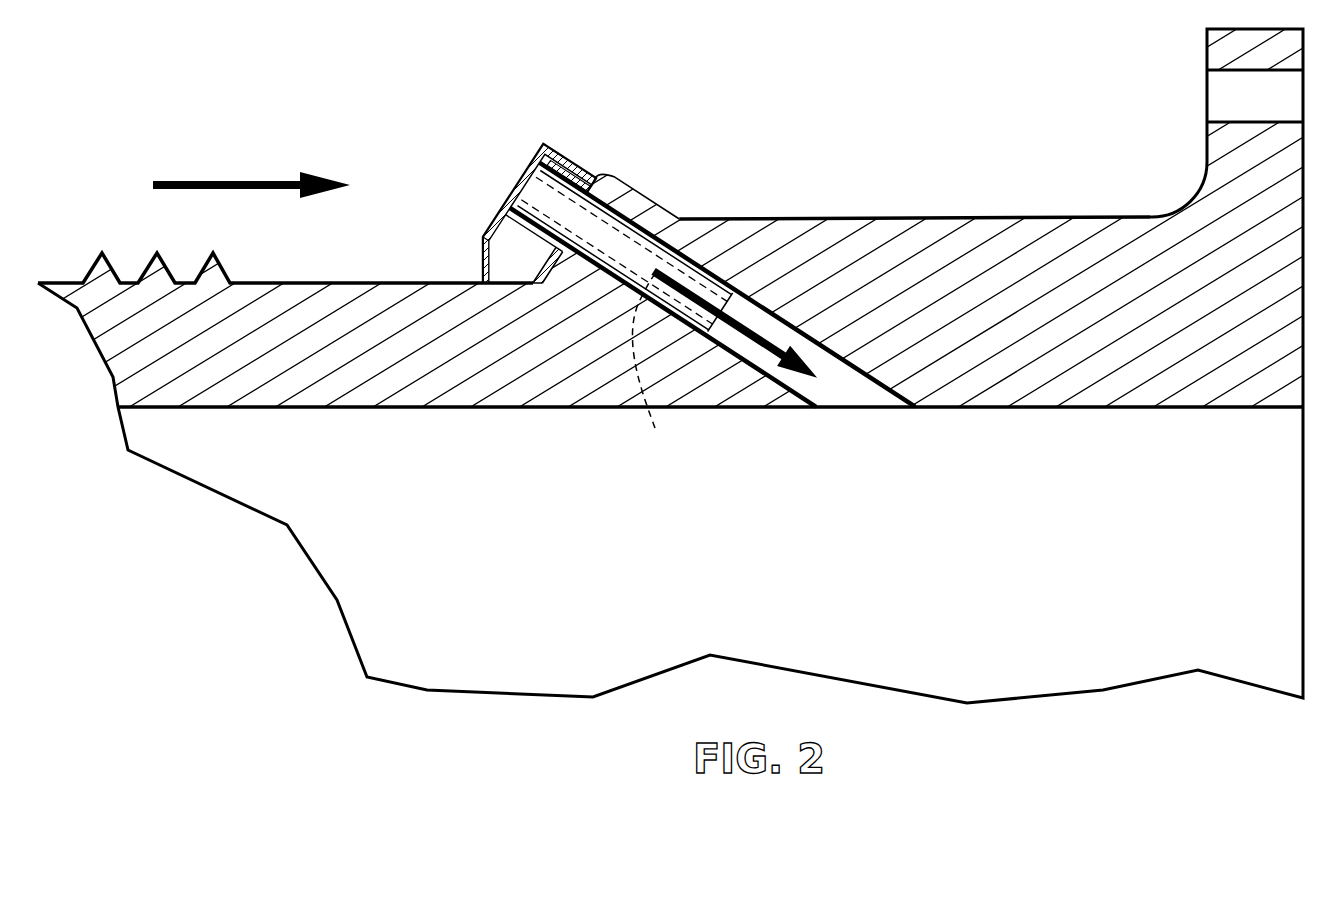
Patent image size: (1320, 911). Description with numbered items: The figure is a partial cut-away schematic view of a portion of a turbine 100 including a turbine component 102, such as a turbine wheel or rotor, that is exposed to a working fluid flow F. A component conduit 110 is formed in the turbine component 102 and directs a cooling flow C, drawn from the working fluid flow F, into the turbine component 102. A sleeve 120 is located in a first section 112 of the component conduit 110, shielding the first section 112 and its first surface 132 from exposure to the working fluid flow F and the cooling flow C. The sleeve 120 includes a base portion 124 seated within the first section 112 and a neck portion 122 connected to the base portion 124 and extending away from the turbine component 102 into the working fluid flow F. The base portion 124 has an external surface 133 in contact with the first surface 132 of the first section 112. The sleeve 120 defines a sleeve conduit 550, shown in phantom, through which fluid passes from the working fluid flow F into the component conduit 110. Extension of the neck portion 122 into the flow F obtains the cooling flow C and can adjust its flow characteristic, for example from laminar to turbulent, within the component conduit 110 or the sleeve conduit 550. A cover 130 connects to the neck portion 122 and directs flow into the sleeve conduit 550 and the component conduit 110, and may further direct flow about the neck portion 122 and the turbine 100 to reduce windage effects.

The turbine 100 is at (257, 100).
The turbine component 102 is at (650, 578).
The component conduit 110 is at (838, 372).
The first section 112 is at (628, 212).
The sleeve 120 is at (680, 217).
The neck portion 122 is at (525, 226).
The base portion 124 is at (568, 246).
The cover 130 is at (580, 160).
The first surface 132 is at (592, 184).
The external surface 133 is at (545, 263).
The sleeve conduit 550 is at (654, 363).
The cooling flow C is at (750, 343).
The working fluid flow F is at (251, 178).